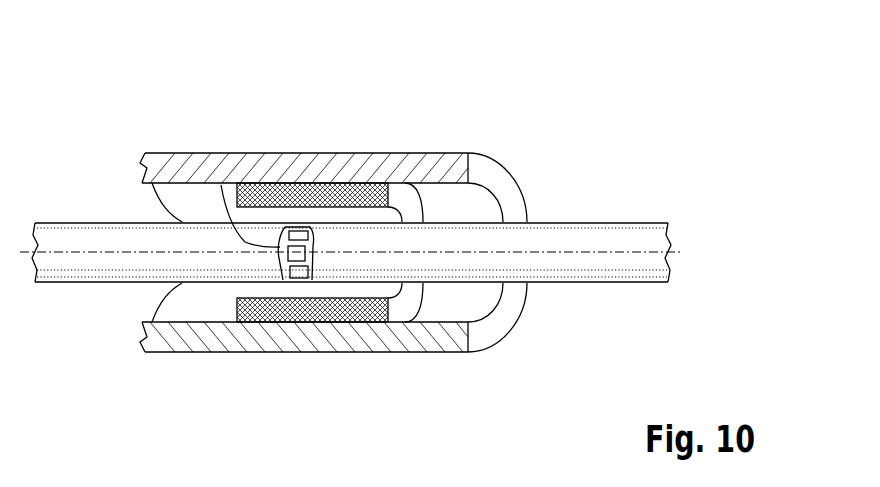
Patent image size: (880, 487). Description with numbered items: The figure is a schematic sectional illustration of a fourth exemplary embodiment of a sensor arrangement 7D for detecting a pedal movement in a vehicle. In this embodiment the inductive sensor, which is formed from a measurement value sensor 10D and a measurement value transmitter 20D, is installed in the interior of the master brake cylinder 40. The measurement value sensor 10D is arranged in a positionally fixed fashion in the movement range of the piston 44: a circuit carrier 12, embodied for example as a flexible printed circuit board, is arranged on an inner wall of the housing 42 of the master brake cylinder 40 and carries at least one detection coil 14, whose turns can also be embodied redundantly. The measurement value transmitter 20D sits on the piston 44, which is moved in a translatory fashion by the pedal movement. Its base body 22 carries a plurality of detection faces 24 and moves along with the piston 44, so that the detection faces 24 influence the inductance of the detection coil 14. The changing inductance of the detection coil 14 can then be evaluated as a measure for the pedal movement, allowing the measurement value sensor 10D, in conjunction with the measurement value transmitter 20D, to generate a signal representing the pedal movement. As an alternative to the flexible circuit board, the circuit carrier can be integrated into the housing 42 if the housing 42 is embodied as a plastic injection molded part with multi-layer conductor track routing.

The sensor arrangement 7D is at (365, 125).
The measurement value sensor 10D is at (413, 162).
The circuit carrier 12 is at (255, 195).
The detection coil 14 is at (300, 190).
The measurement value transmitter 20D is at (272, 256).
The base body 22 is at (313, 243).
The detection faces 24 is at (221, 185).
The master brake cylinder 40 is at (609, 127).
The housing 42 is at (497, 178).
The piston 44 is at (577, 262).